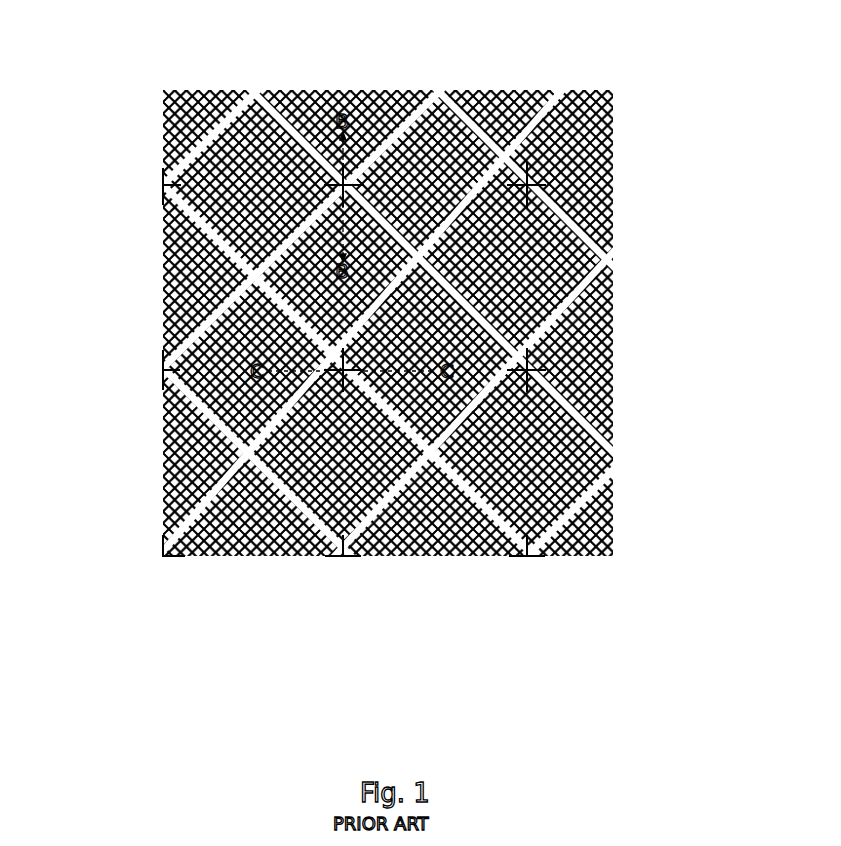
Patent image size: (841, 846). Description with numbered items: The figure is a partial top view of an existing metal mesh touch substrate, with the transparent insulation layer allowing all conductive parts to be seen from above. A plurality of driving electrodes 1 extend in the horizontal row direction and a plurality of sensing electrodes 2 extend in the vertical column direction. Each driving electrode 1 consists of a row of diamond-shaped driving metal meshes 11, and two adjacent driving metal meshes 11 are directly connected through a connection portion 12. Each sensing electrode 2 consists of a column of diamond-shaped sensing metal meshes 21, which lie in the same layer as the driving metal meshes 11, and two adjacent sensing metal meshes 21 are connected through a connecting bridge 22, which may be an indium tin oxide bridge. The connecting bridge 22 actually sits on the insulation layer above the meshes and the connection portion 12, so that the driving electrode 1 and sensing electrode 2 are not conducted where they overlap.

The driving electrode 1 is at (415, 322).
The driving metal mesh 11 is at (393, 148).
The connection portion 12 is at (543, 197).
The sensing electrode 2 is at (165, 578).
The sensing metal mesh 21 is at (165, 287).
The connecting bridge 22 is at (533, 172).